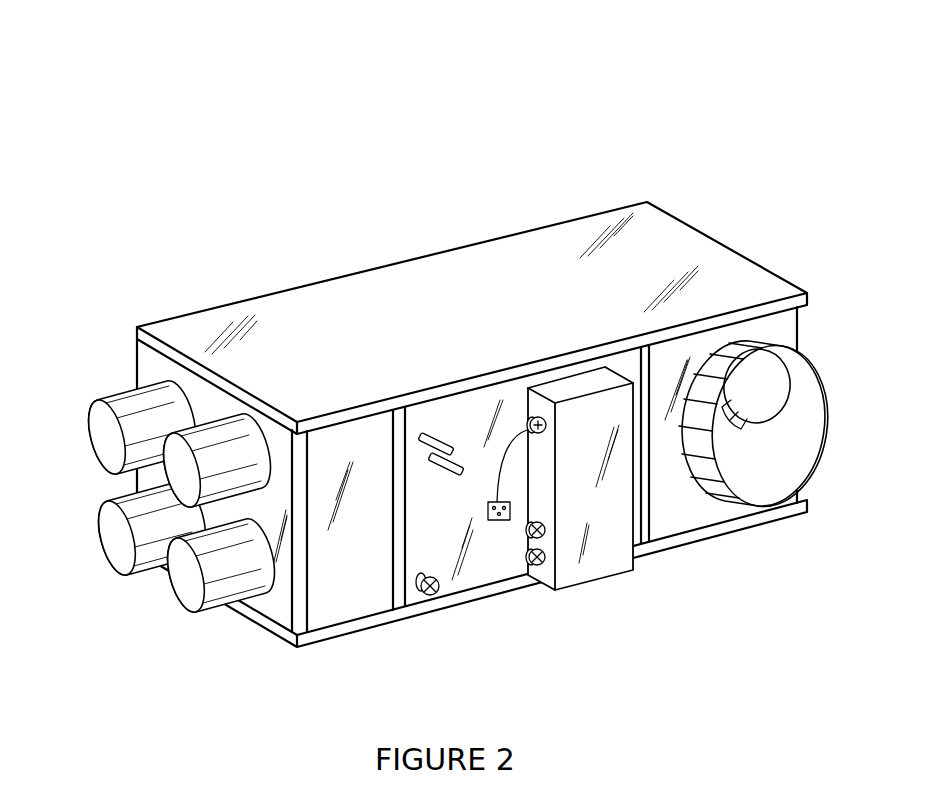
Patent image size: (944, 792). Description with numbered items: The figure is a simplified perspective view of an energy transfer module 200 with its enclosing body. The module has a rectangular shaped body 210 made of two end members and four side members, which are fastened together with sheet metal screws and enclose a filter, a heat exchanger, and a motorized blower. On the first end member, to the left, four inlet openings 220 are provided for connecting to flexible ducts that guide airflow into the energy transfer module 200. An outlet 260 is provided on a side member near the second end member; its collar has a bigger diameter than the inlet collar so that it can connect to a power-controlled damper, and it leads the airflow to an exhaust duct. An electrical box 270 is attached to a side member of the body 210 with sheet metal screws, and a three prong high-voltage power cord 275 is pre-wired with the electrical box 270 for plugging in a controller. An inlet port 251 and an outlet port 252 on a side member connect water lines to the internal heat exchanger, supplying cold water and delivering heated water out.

The energy transfer module 200 is at (507, 153).
The rectangular shaped body 210 is at (652, 253).
The inlet openings 220 is at (97, 510).
The inlet port 251 is at (438, 440).
The outlet port 252 is at (452, 473).
The outlet 260 is at (825, 386).
The electrical box 270 is at (595, 555).
The three prong high-voltage power cord 275 is at (497, 520).